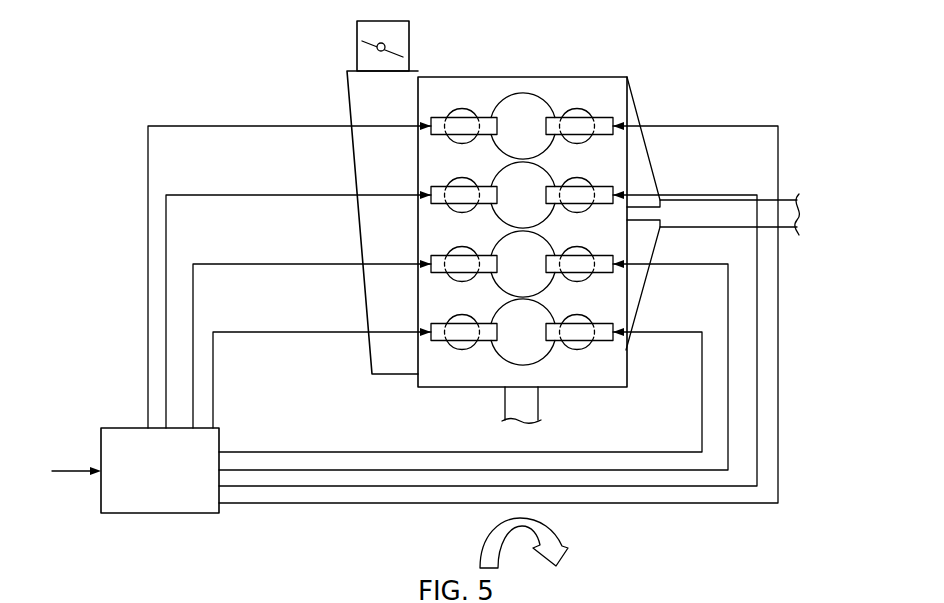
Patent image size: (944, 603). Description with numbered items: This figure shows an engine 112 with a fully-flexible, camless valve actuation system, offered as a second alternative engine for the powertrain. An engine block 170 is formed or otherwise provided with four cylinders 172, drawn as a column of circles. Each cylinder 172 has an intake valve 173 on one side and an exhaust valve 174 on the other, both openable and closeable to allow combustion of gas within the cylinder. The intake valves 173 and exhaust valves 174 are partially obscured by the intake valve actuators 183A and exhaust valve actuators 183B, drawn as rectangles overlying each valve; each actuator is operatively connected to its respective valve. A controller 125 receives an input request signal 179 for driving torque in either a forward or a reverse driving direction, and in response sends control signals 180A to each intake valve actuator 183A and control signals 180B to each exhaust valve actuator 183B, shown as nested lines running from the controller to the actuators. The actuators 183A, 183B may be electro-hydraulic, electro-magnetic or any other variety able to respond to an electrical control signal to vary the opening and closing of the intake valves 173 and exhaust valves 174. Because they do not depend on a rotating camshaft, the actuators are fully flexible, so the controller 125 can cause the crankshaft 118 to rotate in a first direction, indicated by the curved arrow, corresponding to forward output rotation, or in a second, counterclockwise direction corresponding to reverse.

The engine 112 is at (718, 98).
The crankshaft 118 is at (538, 404).
The controller 125 is at (185, 483).
The engine block 170 is at (613, 388).
The cylinders 172 is at (505, 157).
The intake valves 173 is at (455, 111).
The exhaust valves 174 is at (578, 109).
The input request signal 179 is at (80, 468).
The control signals 180A is at (265, 125).
The control signals 180B is at (702, 357).
The intake valve actuators 183A is at (447, 118).
The exhaust valve actuators 183B is at (613, 117).